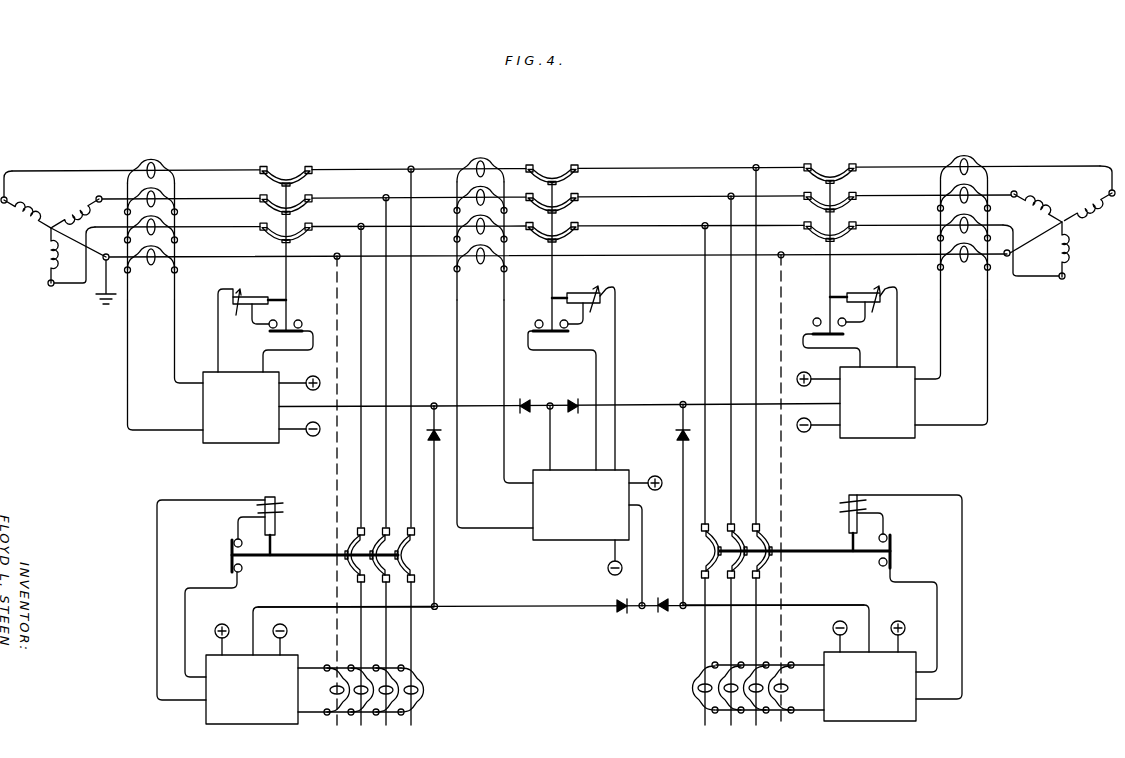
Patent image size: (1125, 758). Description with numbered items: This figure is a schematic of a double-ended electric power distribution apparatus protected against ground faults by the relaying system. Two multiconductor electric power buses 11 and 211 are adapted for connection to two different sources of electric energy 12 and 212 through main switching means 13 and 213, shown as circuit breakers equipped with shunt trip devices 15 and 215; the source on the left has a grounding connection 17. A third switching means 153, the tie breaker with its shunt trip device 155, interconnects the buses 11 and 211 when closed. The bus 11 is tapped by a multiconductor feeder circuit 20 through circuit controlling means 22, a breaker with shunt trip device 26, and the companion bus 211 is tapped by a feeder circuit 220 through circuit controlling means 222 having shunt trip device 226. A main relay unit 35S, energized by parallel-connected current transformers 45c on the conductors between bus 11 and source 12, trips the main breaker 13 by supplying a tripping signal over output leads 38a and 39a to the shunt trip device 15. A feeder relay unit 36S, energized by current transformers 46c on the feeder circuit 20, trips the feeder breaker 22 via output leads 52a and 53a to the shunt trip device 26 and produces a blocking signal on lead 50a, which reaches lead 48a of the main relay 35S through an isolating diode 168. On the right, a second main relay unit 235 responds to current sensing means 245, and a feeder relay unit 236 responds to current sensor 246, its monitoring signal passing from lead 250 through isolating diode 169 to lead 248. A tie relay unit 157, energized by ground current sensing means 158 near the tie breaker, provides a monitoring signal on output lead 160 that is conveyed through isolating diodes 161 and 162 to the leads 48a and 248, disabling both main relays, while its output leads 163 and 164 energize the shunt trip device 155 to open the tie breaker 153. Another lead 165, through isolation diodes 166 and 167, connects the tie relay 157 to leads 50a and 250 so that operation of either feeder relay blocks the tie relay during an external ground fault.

The electric power bus 11 is at (374, 350).
The source of electric energy 12 is at (55, 228).
The main switching means 13 is at (286, 239).
The shunt trip device 15 is at (267, 303).
The grounding connection 17 is at (100, 290).
The feeder circuit 20 is at (388, 640).
The circuit controlling means 22 is at (387, 555).
The shunt trip device 26 is at (304, 534).
The main relay unit 35S is at (228, 436).
The feeder relay unit 36S is at (208, 715).
The output lead 38a is at (217, 325).
The output lead 39a is at (263, 365).
The current transformers 45c is at (147, 160).
The current transformers 46c is at (423, 688).
The lead 48a is at (298, 412).
The output lead 50a is at (313, 607).
The output lead 52a is at (157, 638).
The output lead 53a is at (185, 603).
The third switching means 153 is at (552, 238).
The shunt trip device 155 is at (566, 301).
The tie relay unit 157 is at (568, 532).
The ground current sensing means 158 is at (477, 157).
The output lead 160 is at (548, 448).
The isolating diode 161 is at (525, 398).
The isolating diode 162 is at (573, 414).
The output lead 163 is at (617, 375).
The output lead 164 is at (595, 376).
The lead 165 is at (643, 545).
The isolation diode 166 is at (621, 613).
The isolation diode 167 is at (663, 594).
The diode 168 is at (440, 435).
The isolating diode 169 is at (678, 435).
The electric power bus 211 is at (736, 348).
The source of electric energy 212 is at (1059, 222).
The main switching means 213 is at (830, 238).
The shunt trip device 215 is at (850, 319).
The feeder circuit 220 is at (725, 638).
The circuit controlling means 222 is at (731, 551).
The shunt trip device 226 is at (821, 531).
The main relay unit 235 is at (892, 430).
The feeder relay unit 236 is at (907, 707).
The current sensing means 245 is at (968, 158).
The current sensor 246 is at (694, 682).
The lead 248 is at (820, 407).
The lead 250 is at (822, 600).